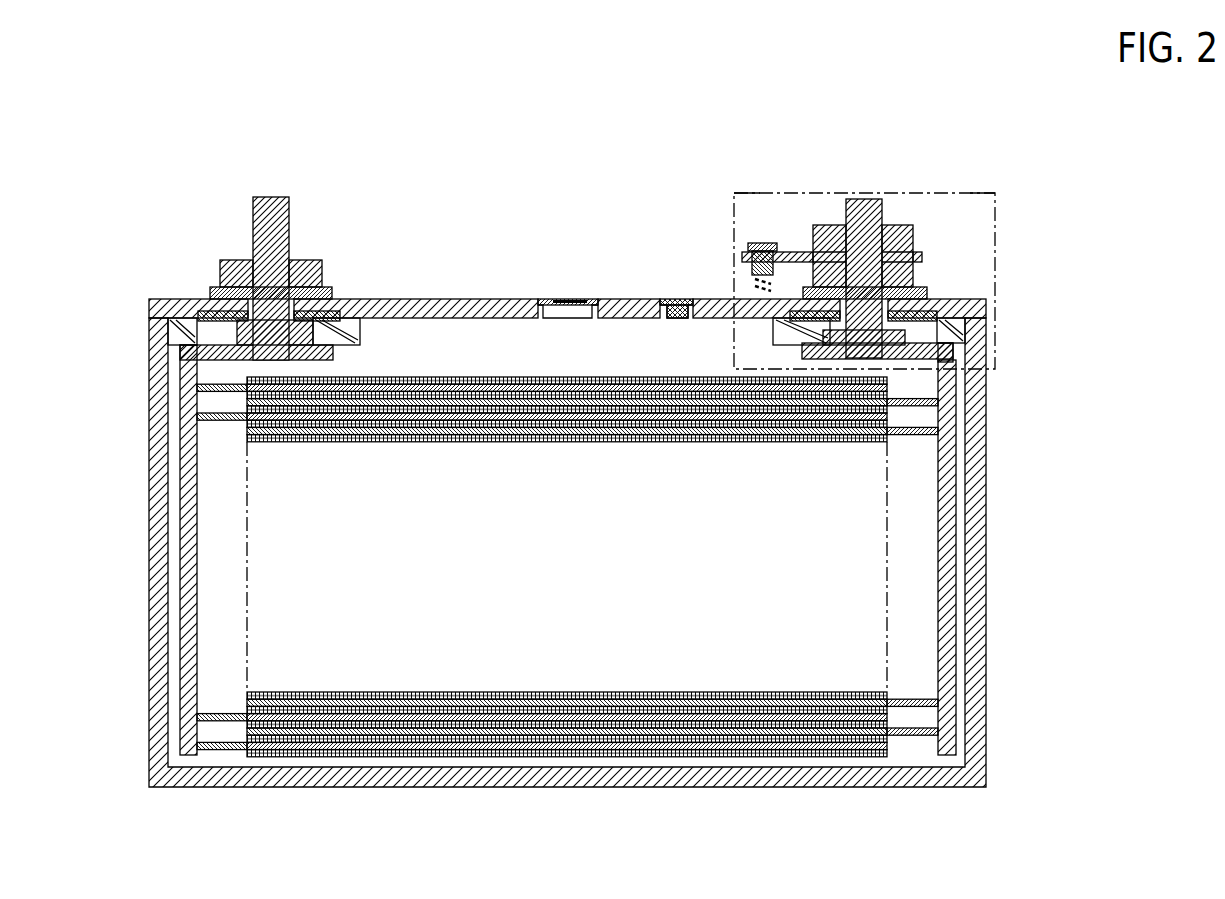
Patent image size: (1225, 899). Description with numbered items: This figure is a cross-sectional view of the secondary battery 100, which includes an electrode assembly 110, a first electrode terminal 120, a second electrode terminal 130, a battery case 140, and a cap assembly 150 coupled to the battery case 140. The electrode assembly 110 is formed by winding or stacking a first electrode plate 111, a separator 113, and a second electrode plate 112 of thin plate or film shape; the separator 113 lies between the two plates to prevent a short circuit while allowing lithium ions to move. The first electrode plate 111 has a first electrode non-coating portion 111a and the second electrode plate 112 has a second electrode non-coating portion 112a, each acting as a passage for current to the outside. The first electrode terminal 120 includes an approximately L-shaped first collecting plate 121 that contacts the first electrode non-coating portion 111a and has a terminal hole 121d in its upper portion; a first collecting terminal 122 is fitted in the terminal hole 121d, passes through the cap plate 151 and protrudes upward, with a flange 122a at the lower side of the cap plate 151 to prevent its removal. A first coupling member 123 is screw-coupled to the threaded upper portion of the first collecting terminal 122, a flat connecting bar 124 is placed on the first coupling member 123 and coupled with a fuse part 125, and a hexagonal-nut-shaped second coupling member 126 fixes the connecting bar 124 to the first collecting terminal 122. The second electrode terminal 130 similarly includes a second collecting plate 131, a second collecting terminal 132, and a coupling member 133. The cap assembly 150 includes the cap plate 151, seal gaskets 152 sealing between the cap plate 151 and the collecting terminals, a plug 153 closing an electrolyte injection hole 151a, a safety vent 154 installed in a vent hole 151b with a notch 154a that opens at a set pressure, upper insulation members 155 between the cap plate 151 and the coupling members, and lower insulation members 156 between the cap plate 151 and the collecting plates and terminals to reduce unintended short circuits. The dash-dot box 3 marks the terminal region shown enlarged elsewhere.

The secondary battery 100 is at (1023, 61).
The electrode assembly 110 is at (569, 619).
The first electrode plate 111 is at (596, 630).
The first electrode non-coating portion 111a is at (917, 735).
The second electrode plate 112 is at (540, 622).
The second electrode non-coating portion 112a is at (221, 749).
The separator 113 is at (587, 752).
The first electrode terminal 120 is at (907, 254).
The first collecting plate 121 is at (974, 549).
The terminal hole 121d is at (868, 360).
The first collecting terminal 122 is at (941, 267).
The flange 122a is at (912, 343).
The first coupling member 123 is at (900, 237).
The connecting bar 124 is at (921, 262).
The fuse part 125 is at (760, 228).
The second coupling member 126 is at (913, 256).
The second electrode terminal 130 is at (277, 233).
The second collecting plate 131 is at (190, 640).
The second collecting terminal 132 is at (261, 196).
The coupling member 133 is at (233, 258).
The battery case 140 is at (987, 432).
The cap assembly 150 is at (567, 288).
The cap plate 151 is at (567, 304).
The electrolyte injection hole 151a is at (672, 320).
The vent hole 151b is at (565, 320).
The seal gasket 152 is at (243, 312).
The plug 153 is at (677, 298).
The safety vent 154 is at (572, 269).
The notch 154a is at (566, 298).
The upper insulation member 155 is at (213, 296).
The lower insulation member 156 is at (176, 330).
The enlarged region of FIG. 3 is at (913, 192).